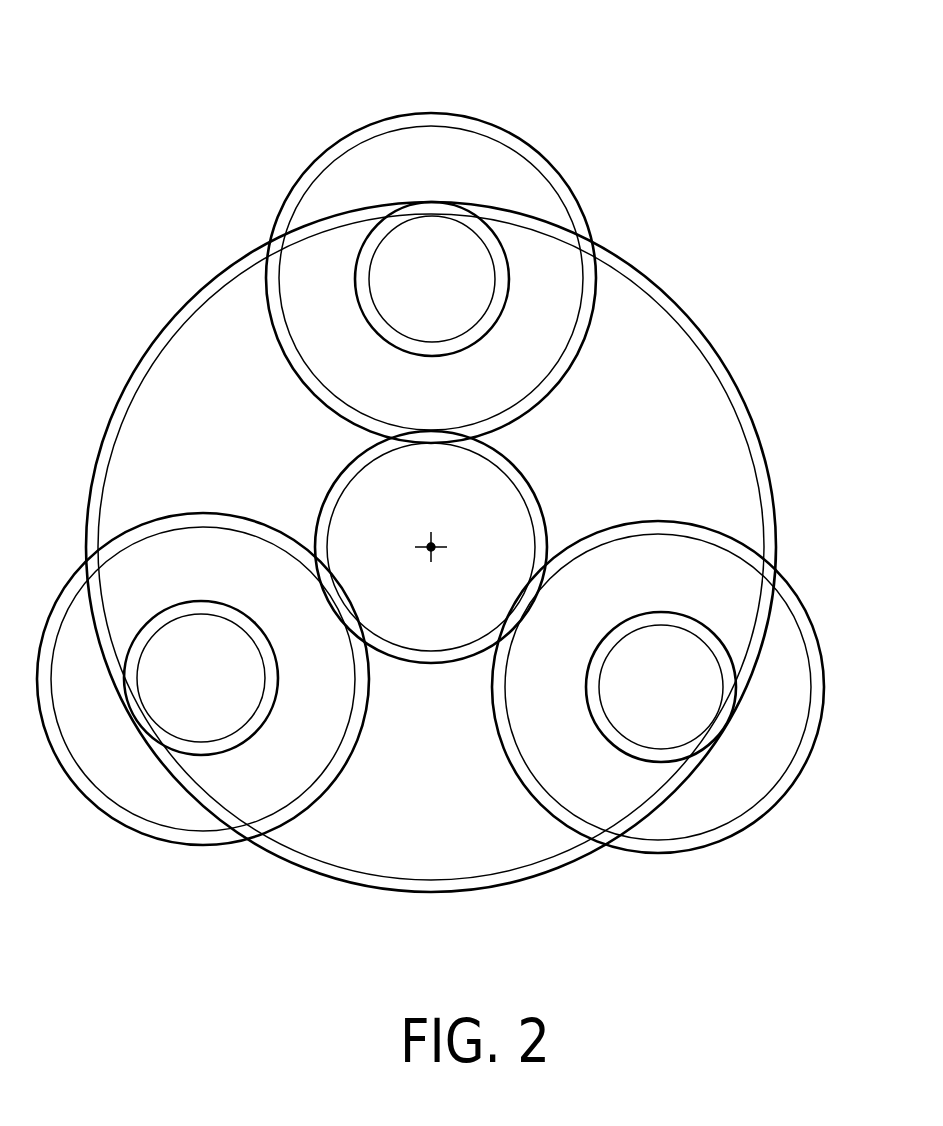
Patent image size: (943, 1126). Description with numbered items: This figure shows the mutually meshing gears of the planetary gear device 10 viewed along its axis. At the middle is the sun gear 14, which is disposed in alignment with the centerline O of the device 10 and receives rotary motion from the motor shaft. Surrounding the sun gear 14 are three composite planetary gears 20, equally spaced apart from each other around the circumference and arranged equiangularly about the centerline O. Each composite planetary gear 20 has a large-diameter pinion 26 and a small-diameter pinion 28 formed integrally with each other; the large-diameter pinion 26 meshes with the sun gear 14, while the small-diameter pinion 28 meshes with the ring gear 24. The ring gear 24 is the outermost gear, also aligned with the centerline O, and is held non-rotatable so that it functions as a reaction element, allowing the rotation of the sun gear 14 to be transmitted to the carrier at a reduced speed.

The planetary gear device 10 is at (182, 137).
The sun gear 14 is at (440, 632).
The composite planetary gear 20 is at (565, 100).
The ring gear 24 is at (203, 293).
The large-diameter pinion 26 is at (418, 153).
The small-diameter pinion 28 is at (467, 307).
The centerline O is at (440, 533).